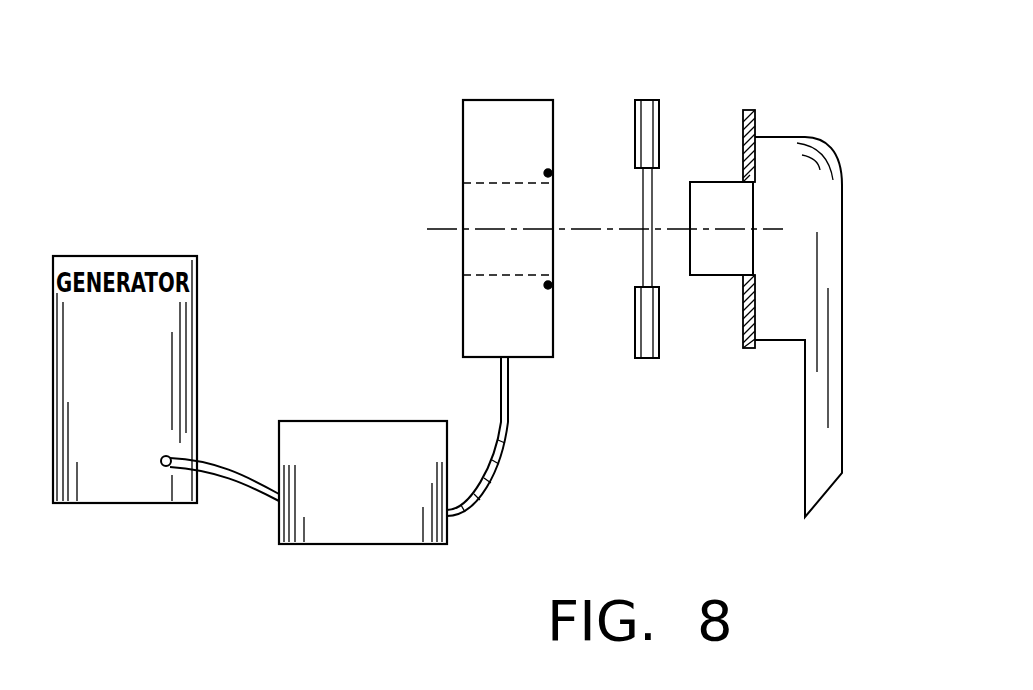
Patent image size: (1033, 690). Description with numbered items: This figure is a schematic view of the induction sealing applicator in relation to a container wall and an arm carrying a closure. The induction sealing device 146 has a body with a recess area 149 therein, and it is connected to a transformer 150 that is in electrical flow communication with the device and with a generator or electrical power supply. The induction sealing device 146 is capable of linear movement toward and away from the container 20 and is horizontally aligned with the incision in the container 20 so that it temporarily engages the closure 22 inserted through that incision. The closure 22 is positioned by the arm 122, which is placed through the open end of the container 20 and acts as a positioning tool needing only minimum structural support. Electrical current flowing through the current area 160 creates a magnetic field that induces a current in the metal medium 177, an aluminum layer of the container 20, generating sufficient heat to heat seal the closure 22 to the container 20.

The container 20 is at (659, 116).
The closure 22 is at (748, 110).
The arm 122 is at (823, 147).
The induction sealing device 146 is at (477, 128).
The recess area 149 is at (460, 252).
The transformer 150 is at (395, 528).
The current area 160 is at (548, 173).
The metal medium 177 is at (645, 357).